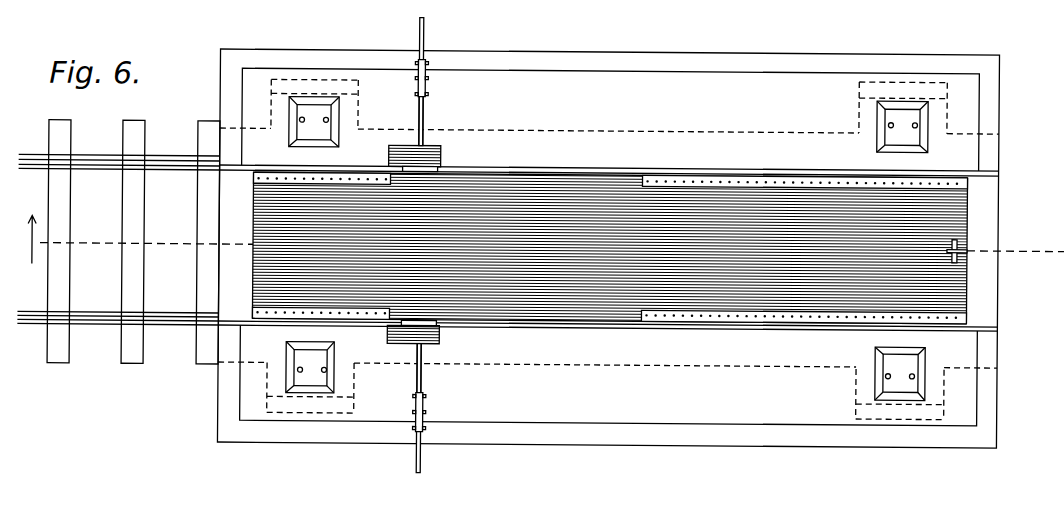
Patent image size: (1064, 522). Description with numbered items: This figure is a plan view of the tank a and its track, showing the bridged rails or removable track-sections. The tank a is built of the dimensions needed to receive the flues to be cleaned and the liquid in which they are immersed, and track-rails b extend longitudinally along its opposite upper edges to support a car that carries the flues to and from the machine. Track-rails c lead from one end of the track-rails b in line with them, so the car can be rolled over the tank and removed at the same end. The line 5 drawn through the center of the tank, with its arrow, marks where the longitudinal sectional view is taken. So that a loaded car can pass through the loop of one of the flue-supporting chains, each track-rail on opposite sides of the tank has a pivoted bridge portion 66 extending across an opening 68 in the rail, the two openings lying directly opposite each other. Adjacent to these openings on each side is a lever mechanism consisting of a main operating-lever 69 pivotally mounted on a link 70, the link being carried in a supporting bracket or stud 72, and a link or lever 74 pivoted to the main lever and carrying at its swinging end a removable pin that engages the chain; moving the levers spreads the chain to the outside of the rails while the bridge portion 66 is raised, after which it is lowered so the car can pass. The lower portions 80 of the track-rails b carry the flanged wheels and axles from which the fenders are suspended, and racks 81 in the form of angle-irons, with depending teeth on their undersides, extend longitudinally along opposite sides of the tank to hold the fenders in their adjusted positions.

The section line 5 is at (27, 244).
The pivoted bridge portion 66 is at (437, 168).
The opening in the rail 68 is at (388, 154).
The main operating-lever 69 is at (418, 24).
The link 70 is at (426, 68).
The supporting bracket or stud 72 is at (415, 62).
The link or lever 74 is at (424, 112).
The lower portions of the track-rails 80 is at (561, 174).
The racks 81 is at (340, 185).
The tank a is at (609, 248).
The track-rails b is at (556, 173).
The track-rails c is at (105, 168).